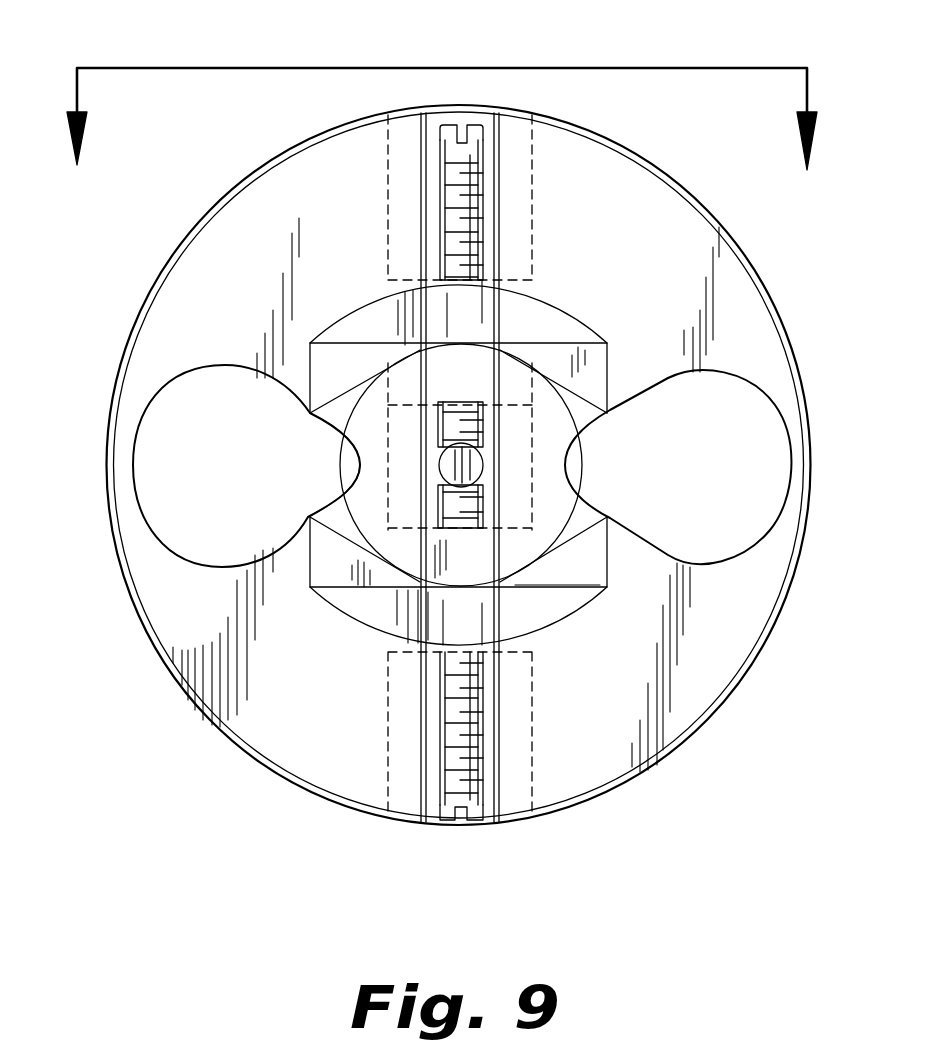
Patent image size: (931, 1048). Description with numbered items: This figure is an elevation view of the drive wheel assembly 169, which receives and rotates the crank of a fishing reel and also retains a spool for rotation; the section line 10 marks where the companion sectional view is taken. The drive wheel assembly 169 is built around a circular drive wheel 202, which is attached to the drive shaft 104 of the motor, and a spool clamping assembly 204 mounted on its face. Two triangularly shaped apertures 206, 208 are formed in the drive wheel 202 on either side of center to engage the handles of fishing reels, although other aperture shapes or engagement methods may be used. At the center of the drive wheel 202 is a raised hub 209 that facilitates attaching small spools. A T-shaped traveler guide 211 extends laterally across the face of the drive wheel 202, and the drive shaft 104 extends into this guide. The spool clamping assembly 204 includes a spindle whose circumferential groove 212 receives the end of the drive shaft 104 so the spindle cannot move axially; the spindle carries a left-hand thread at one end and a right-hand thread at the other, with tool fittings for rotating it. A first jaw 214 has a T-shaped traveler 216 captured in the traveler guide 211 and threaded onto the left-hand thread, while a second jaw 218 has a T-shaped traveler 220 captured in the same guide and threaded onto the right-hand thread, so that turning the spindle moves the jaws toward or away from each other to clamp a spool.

The section line 10- 10 is at (445, 92).
The drive shaft 104 is at (483, 463).
The drive wheel assembly 169 is at (106, 289).
The drive wheel 202 is at (118, 395).
The spool clamping assembly 204 is at (318, 306).
The triangularly shaped aperture 206 is at (174, 509).
The triangularly shaped aperture 208 is at (750, 511).
The raised hub 209 is at (372, 514).
The T-shaped traveler guide 211 is at (425, 138).
The circumferential groove 212 is at (450, 463).
The first jaw 214 is at (562, 333).
The T-shaped traveler 216 is at (468, 359).
The second jaw 218 is at (370, 605).
The T-shaped traveler 220 is at (467, 563).